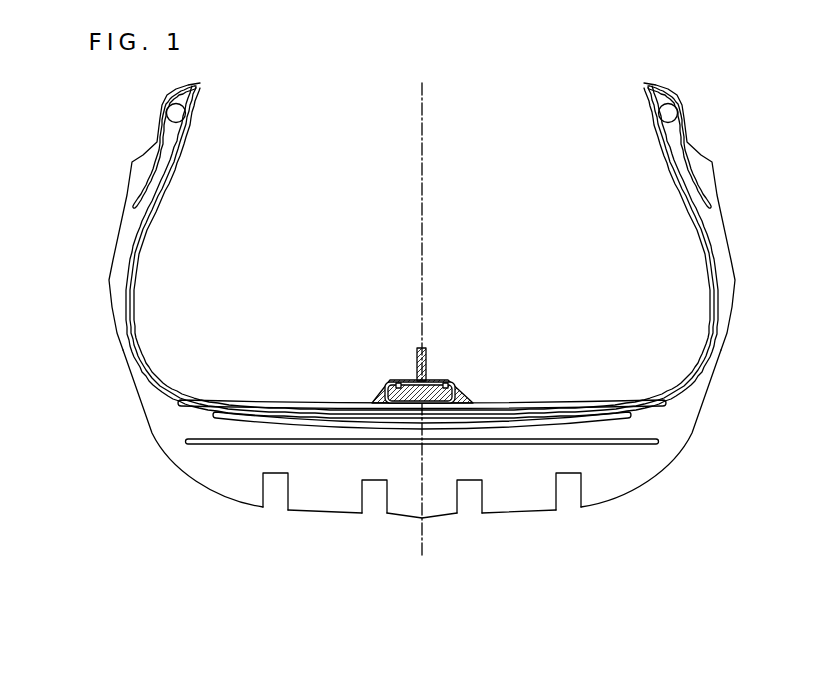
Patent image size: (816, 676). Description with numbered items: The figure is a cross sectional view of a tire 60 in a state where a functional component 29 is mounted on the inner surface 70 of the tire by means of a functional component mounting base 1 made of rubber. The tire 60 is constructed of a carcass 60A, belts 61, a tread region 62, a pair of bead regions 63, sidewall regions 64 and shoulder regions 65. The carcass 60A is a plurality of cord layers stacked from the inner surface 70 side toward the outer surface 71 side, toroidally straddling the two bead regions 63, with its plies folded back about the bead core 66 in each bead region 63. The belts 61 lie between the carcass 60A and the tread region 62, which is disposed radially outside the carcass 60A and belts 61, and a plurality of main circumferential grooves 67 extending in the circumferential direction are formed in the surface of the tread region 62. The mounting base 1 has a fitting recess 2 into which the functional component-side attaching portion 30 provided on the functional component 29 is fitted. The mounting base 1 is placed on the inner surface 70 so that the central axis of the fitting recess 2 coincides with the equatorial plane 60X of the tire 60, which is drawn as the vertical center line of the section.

The functional component mounting base 1 is at (467, 399).
The fitting recess 2 is at (445, 349).
The functional component 29 is at (432, 352).
The functional component-side attaching portion 30 is at (461, 382).
The tire 60 is at (424, 323).
The carcass 60A is at (554, 405).
The equatorial plane 60X is at (420, 142).
The belts 61 is at (327, 419).
The tread region 62 is at (525, 512).
The bead regions 63 is at (159, 105).
The sidewall regions 64 is at (113, 289).
The shoulder regions 65 is at (151, 434).
The bead core 66 is at (183, 111).
The main circumferential grooves 67 is at (264, 500).
The inner surface 70 is at (527, 403).
The outer surface 71 is at (507, 515).